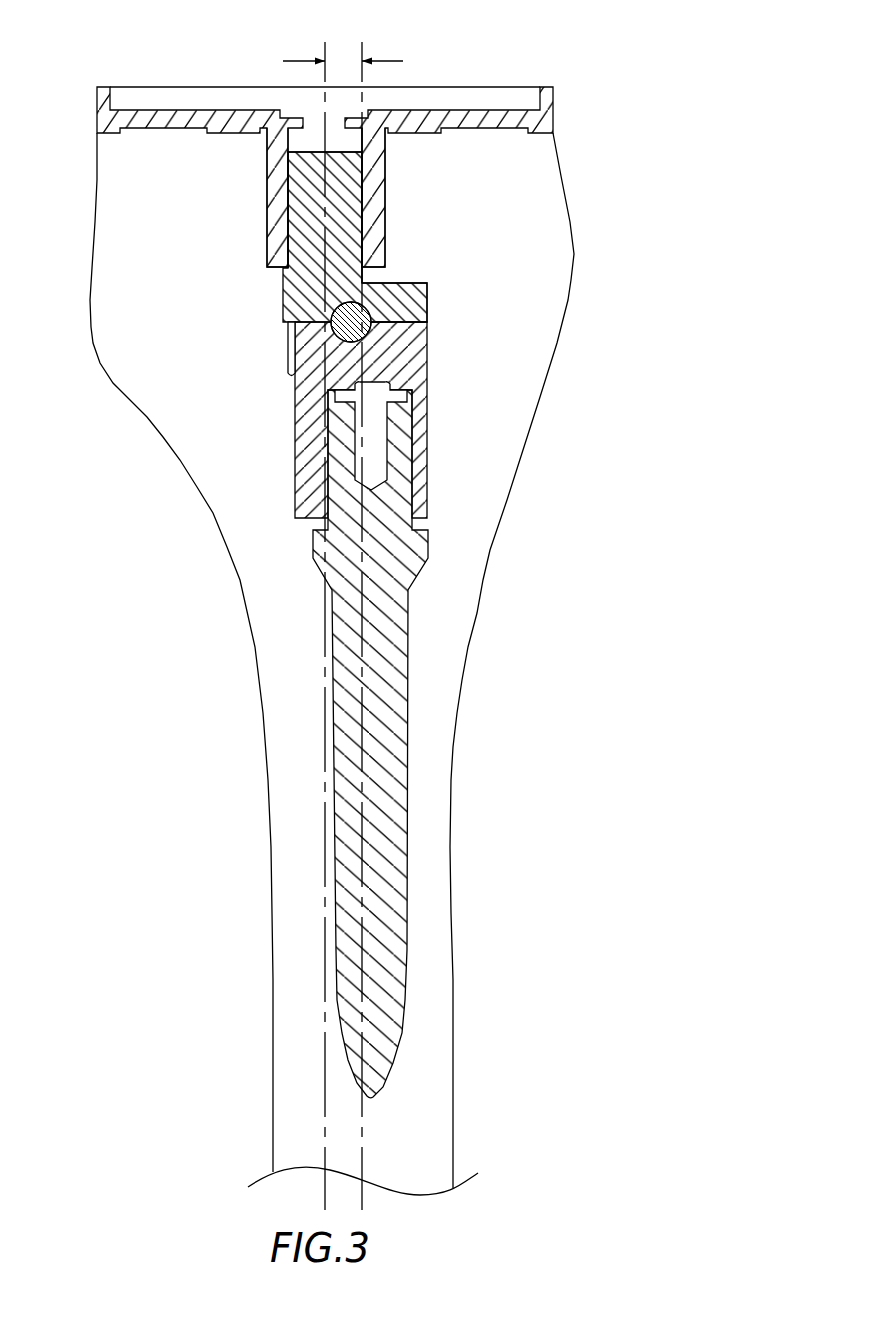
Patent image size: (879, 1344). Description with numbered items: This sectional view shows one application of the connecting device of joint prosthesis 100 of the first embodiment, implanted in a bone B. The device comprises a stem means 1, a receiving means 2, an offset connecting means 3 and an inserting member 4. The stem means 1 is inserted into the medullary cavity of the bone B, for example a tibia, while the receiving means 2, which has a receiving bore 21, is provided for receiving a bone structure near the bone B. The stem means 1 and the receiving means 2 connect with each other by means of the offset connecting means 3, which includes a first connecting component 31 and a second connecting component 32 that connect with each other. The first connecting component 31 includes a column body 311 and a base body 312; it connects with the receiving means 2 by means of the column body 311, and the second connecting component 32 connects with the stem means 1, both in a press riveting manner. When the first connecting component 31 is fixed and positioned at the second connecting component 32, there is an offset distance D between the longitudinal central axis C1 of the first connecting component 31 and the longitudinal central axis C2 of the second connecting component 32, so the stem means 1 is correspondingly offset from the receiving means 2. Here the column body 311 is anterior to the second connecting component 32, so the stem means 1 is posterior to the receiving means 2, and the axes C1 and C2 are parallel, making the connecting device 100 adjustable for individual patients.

The connecting device of joint prosthesis 100 is at (367, 561).
The stem means 1 is at (392, 860).
The receiving means 2 is at (290, 177).
The receiving bore 21 is at (280, 174).
The offset connecting means 3 is at (354, 335).
The first connecting component 31 is at (316, 237).
The column body 311 is at (292, 213).
The base body 312 is at (418, 283).
The second connecting component 32 is at (428, 374).
The inserting member 4 is at (332, 350).
The bone B is at (552, 240).
The longitudinal central axis of the first connecting component C1 is at (325, 1099).
The longitudinal central axis of the second connecting component C2 is at (362, 1133).
The offset distance D is at (328, 60).